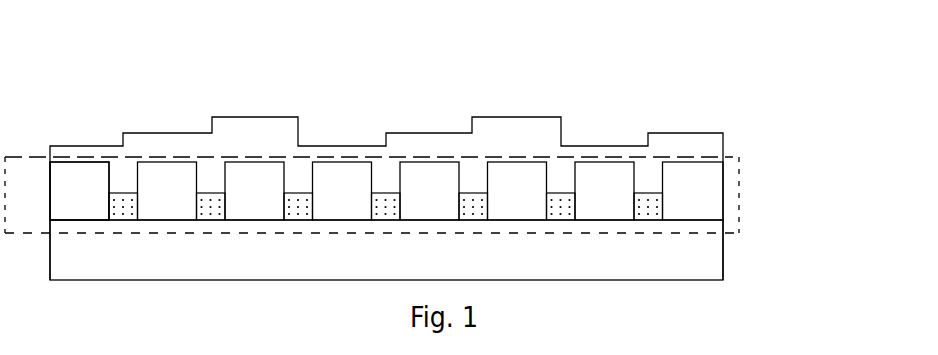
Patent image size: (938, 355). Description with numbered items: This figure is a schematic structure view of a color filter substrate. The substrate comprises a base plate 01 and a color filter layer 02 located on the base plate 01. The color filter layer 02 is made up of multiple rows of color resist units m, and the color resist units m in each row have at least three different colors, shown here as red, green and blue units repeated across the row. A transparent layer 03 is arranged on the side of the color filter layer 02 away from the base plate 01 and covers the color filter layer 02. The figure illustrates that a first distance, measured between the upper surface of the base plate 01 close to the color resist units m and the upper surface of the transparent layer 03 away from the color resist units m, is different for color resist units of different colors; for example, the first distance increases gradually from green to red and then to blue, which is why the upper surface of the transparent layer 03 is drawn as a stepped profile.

The base plate 01 is at (723, 260).
The color filter layer 02 is at (739, 192).
The transparent layer 03 is at (253, 140).
The color resist unit m is at (68, 178).